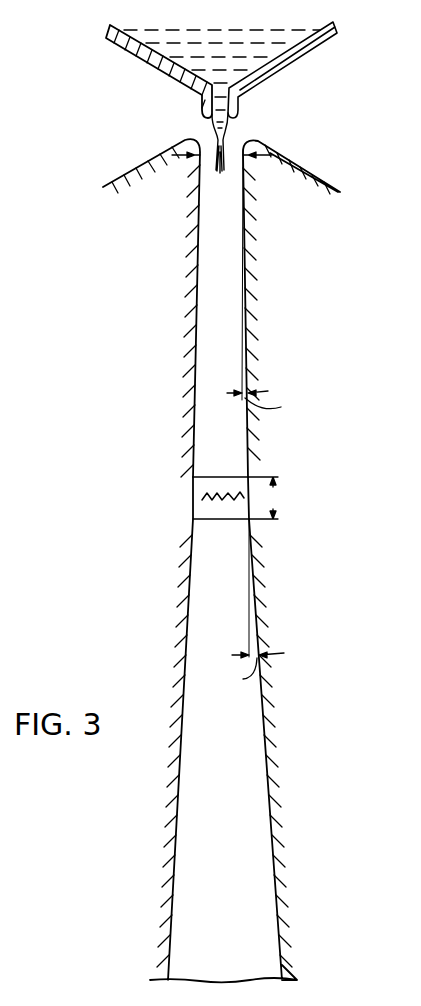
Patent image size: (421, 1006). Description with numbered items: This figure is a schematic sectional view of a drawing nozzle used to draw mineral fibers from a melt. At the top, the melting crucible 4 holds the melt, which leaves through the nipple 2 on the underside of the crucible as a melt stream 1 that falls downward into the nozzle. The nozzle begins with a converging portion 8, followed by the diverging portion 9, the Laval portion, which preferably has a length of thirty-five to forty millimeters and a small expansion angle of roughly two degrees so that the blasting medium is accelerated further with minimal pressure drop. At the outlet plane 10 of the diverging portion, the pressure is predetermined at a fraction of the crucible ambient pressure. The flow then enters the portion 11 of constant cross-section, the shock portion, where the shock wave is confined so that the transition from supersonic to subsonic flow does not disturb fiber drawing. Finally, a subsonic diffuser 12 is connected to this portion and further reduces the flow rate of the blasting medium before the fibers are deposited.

The melt stream 1 is at (213, 123).
The nipple on the underside of the crucible 2 is at (240, 106).
The melting crucible 4 is at (172, 73).
The converging portion of the drawing nozzle 8 is at (253, 139).
The diverging portion of the drawing nozzle 9 is at (200, 336).
The outlet plane of the diverging portion 10 is at (215, 476).
The portion of the drawing nozzle with a constant cross-section 11 is at (267, 498).
The subsonic diffuser 12 is at (230, 740).